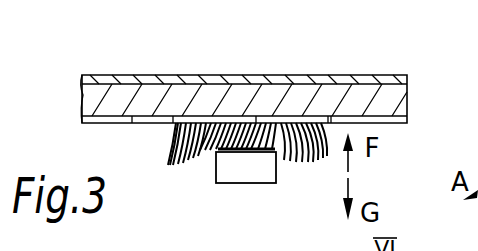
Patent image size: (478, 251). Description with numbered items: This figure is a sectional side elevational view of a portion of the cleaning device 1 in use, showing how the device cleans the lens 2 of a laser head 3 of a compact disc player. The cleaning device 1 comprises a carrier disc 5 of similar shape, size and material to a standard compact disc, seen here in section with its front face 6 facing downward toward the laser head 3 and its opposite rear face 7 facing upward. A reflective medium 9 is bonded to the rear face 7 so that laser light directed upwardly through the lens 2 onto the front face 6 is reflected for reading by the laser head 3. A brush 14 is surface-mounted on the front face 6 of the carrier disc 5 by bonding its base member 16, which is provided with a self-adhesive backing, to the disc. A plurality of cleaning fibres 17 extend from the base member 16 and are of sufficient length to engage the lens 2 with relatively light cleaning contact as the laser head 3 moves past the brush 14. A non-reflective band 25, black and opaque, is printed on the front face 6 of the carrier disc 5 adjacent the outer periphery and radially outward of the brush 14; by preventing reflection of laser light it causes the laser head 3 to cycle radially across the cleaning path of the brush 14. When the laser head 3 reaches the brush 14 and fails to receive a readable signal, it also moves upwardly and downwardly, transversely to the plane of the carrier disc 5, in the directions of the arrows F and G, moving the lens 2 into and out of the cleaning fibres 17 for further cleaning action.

The cleaning device 1 is at (413, 57).
The lens 2 is at (238, 148).
The laser head 3 is at (266, 175).
The carrier disc 5 is at (402, 100).
The front face 6 is at (132, 123).
The rear face 7 is at (212, 88).
The reflective medium 9 is at (139, 76).
The brush 14 is at (176, 158).
The base member 16 is at (255, 122).
The cleaning fibres 17 is at (172, 141).
The non-reflective band 25 is at (110, 124).